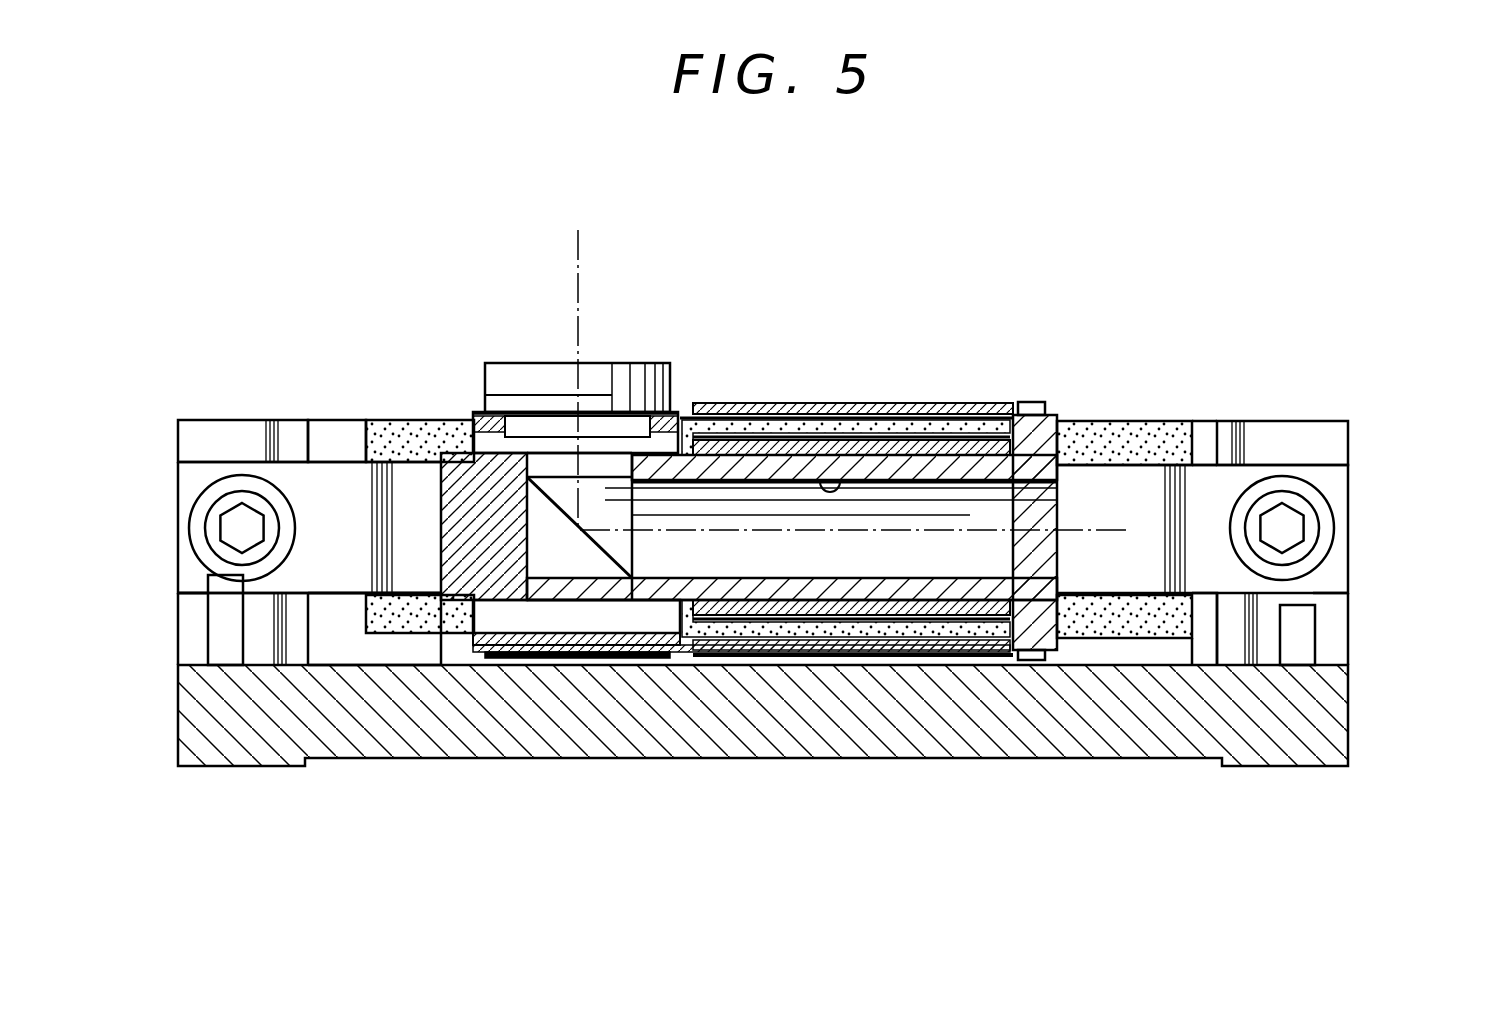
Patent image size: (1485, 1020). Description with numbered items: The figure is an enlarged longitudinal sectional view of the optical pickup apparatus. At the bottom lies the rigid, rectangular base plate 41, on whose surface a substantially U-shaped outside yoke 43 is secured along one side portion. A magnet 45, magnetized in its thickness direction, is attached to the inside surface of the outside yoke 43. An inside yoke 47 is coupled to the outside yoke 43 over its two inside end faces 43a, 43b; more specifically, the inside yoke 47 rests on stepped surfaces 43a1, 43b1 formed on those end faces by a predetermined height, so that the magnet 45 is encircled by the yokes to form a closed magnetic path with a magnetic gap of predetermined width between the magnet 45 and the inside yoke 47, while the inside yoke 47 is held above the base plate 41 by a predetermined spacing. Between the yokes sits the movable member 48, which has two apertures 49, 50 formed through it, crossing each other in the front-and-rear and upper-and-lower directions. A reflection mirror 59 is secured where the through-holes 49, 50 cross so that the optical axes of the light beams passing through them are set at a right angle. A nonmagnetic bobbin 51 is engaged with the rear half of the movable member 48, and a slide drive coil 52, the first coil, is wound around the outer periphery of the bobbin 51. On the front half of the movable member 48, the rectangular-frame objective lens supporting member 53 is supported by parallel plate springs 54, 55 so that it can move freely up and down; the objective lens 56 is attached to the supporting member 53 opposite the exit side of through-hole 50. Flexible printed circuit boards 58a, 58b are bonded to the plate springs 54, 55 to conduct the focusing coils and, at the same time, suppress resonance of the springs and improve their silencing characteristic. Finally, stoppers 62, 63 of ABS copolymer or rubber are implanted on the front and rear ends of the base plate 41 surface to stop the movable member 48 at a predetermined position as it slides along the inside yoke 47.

The base plate 41 is at (190, 702).
The outside yoke 43 is at (340, 432).
The inside end face of outside yoke 43a is at (238, 432).
The stepped surface 43a1 is at (193, 588).
The inside end face of outside yoke 43b is at (1263, 435).
The stepped surface 43b1 is at (1313, 590).
The magnet 45 is at (402, 432).
The inside yoke 47 is at (1105, 482).
The movable member 48 is at (948, 462).
The aperture 49 is at (840, 482).
The aperture 50 is at (543, 455).
The bobbin 51 is at (795, 440).
The slide drive coil 52 is at (990, 432).
The objective lens supporting member 53 is at (483, 408).
The parallel plate spring 54 is at (732, 430).
The parallel plate spring 55 is at (682, 652).
The objective lens 56 is at (630, 380).
The flexible printed circuit board 58a is at (900, 423).
The flexible printed circuit board 58b is at (967, 657).
The reflection mirror 59 is at (620, 520).
The stopper 62 is at (227, 628).
The stopper 63 is at (1297, 637).